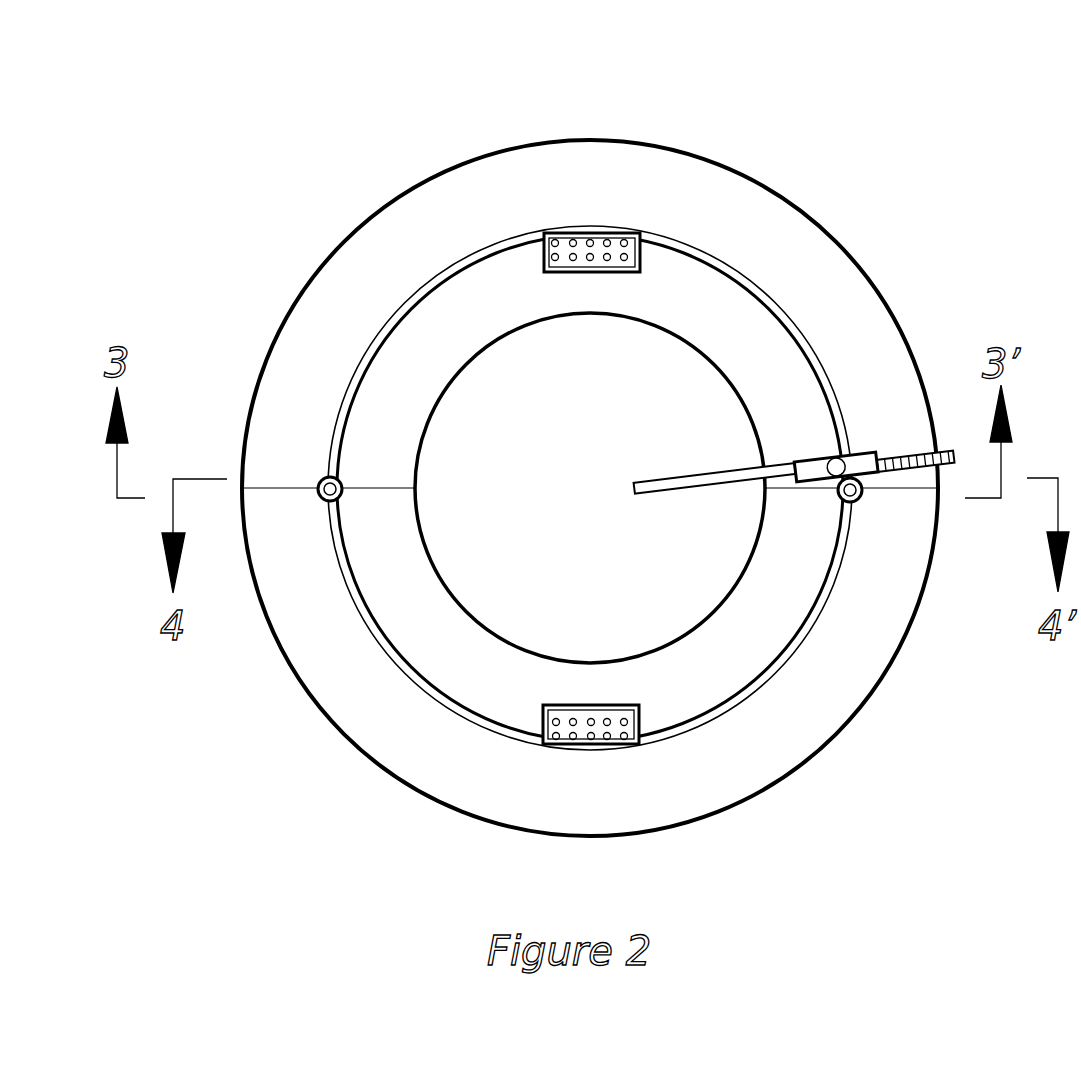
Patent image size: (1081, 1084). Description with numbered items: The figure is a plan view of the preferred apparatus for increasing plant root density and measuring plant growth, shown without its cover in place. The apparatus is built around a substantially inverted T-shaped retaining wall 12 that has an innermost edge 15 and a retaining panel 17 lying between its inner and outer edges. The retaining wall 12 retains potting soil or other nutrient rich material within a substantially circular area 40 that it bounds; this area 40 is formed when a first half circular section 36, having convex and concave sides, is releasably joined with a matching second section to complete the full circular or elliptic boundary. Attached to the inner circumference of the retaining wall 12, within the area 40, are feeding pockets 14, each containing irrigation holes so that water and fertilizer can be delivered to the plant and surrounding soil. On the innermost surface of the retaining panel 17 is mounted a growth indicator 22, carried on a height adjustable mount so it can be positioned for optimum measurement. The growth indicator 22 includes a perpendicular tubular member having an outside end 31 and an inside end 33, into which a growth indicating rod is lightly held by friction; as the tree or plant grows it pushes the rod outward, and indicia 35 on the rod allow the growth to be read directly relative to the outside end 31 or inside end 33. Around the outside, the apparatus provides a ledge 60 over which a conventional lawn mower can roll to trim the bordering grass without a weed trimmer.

The retaining wall 12 is at (287, 714).
The feeding pocket 14 is at (556, 256).
The innermost edge 15 is at (443, 393).
The retaining panel 17 is at (368, 338).
The growth indicator 22 is at (812, 514).
The outside end 31 is at (795, 462).
The inside end 33 is at (873, 456).
The indicia 35 is at (902, 457).
The first half circular section 36 is at (383, 258).
The bounded area 40 is at (507, 602).
The ledge 60 is at (800, 698).